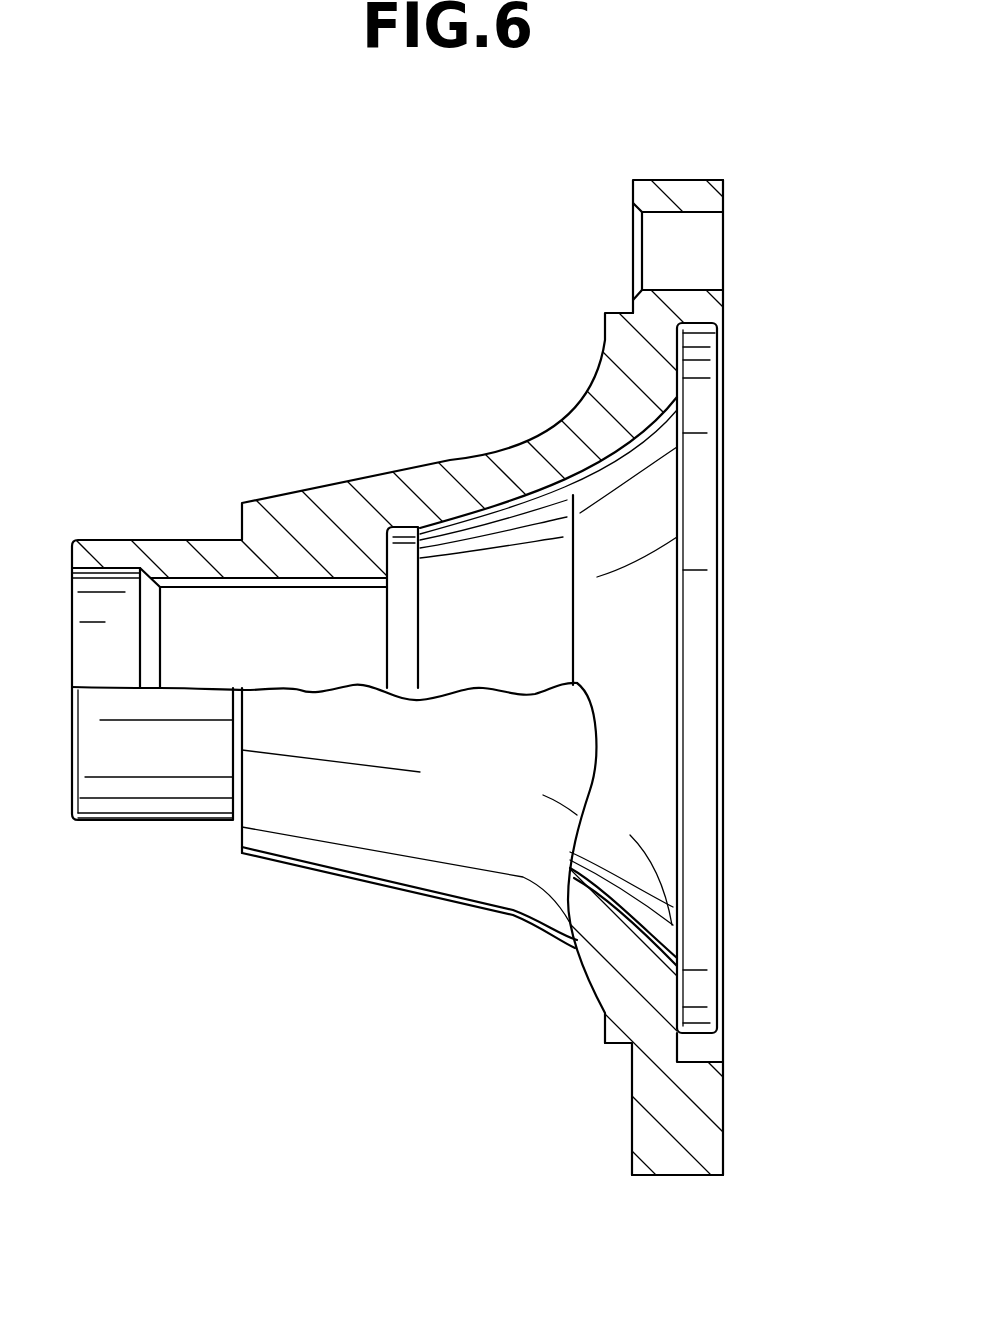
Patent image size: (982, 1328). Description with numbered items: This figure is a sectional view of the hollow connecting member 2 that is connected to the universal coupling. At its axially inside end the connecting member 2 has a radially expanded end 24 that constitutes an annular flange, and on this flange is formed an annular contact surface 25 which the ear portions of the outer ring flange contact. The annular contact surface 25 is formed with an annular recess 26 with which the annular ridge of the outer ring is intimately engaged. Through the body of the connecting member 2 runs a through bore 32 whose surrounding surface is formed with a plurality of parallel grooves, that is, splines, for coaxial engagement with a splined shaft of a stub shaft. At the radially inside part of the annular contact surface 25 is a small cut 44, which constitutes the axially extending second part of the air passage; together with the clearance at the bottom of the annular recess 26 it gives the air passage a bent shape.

The hollow connecting member 2 is at (352, 500).
The radially expanded end 24 is at (678, 1152).
The annular contact surface 25 is at (723, 1118).
The annular recess 26 is at (697, 323).
The through bore 32 is at (327, 590).
The small cut 44 is at (705, 1053).